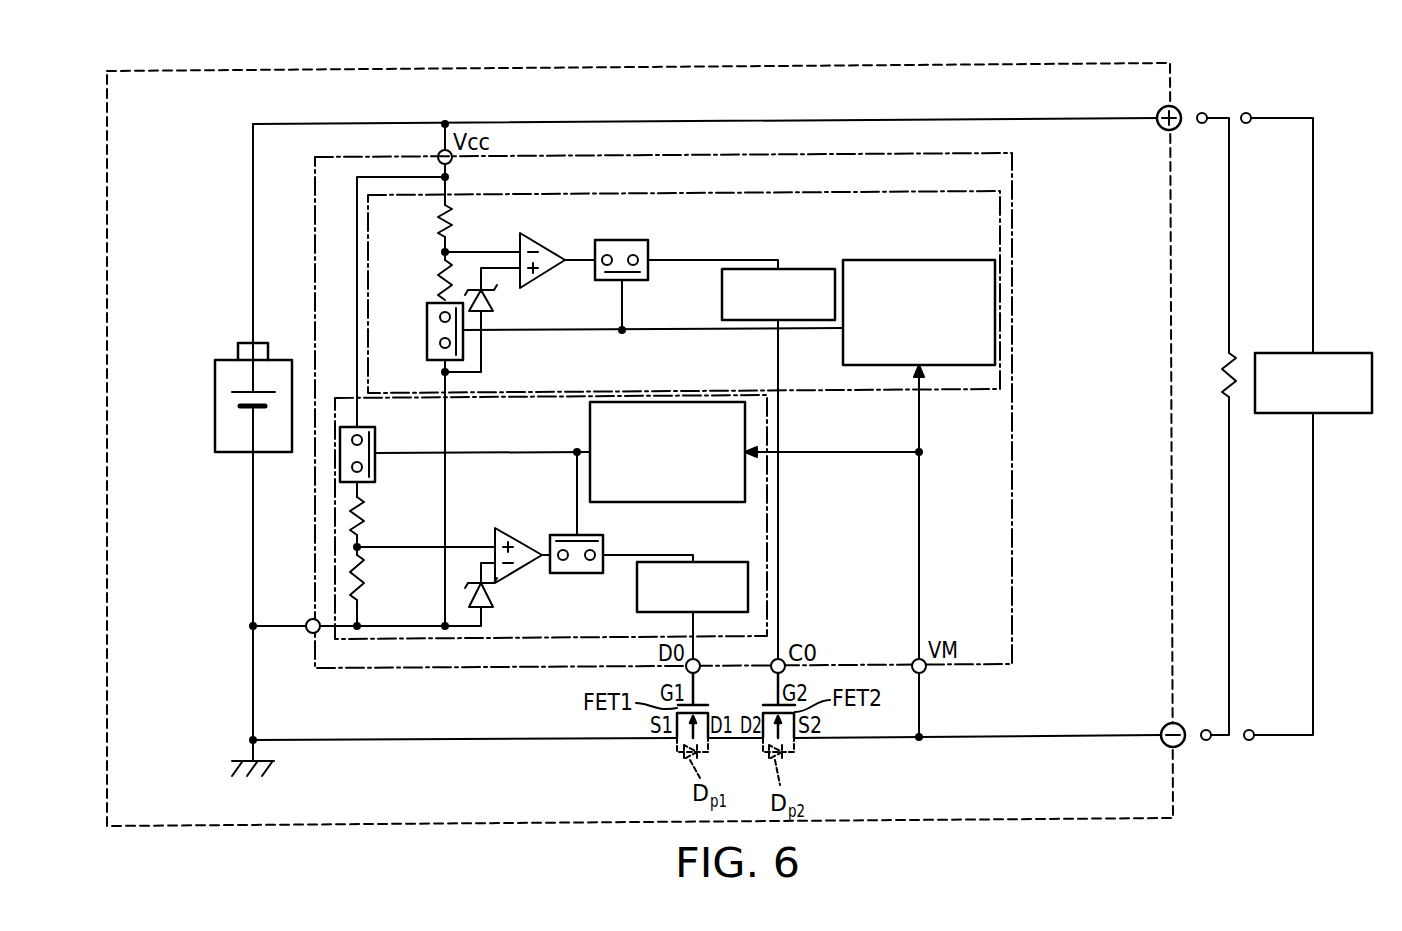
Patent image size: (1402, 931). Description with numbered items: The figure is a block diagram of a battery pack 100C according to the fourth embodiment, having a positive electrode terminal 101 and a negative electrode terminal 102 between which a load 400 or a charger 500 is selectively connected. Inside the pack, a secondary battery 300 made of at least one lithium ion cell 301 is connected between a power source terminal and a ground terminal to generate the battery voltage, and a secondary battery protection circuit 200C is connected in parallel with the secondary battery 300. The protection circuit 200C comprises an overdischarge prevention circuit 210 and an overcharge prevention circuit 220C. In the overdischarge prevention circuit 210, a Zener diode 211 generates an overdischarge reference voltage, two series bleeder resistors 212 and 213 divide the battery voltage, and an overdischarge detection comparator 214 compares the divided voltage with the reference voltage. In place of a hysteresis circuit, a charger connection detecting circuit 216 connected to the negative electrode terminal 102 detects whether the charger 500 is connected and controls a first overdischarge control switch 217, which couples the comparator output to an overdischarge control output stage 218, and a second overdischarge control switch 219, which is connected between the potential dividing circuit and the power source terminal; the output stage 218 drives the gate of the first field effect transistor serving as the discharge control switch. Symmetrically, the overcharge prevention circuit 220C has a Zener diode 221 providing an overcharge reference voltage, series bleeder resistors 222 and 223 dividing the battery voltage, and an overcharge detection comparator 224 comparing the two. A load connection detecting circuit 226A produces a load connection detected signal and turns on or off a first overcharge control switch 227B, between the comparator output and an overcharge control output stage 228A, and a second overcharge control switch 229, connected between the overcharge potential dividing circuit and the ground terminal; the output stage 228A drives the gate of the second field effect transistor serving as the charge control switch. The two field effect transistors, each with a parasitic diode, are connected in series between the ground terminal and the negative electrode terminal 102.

The battery unit (battery pack) 100C is at (1030, 66).
The positive electrode terminal 101 is at (1180, 106).
The negative electrode terminal 102 is at (1184, 745).
The secondary battery protection circuit 200C is at (1018, 228).
The overdischarge prevention circuit 210 is at (362, 642).
The Zener diode 211 is at (495, 600).
The bleeder resistor 212 is at (350, 522).
The bleeder resistor 213 is at (350, 577).
The overdischarge detection comparator 214 is at (519, 528).
The charger connection detecting circuit 216 is at (590, 428).
The first overdischarge control switch 217 is at (590, 578).
The overdischarge control output stage 218 is at (725, 562).
The second overdischarge control switch 219 is at (340, 460).
The overcharge prevention circuit 220C is at (706, 192).
The Zener diode 221 is at (492, 300).
The bleeder resistor 222 is at (452, 214).
The bleeder resistor 223 is at (440, 277).
The overcharge detection comparator 224 is at (555, 276).
The load connection detecting circuit 226A is at (950, 259).
The first overcharge control switch 227B is at (640, 281).
The overcharge control output stage 228A is at (800, 268).
The second overcharge control switch 229 is at (427, 325).
The secondary battery 300 is at (202, 450).
The lithium ion cell 301 is at (243, 414).
The load 400 is at (1222, 383).
The charger 500 is at (1342, 353).